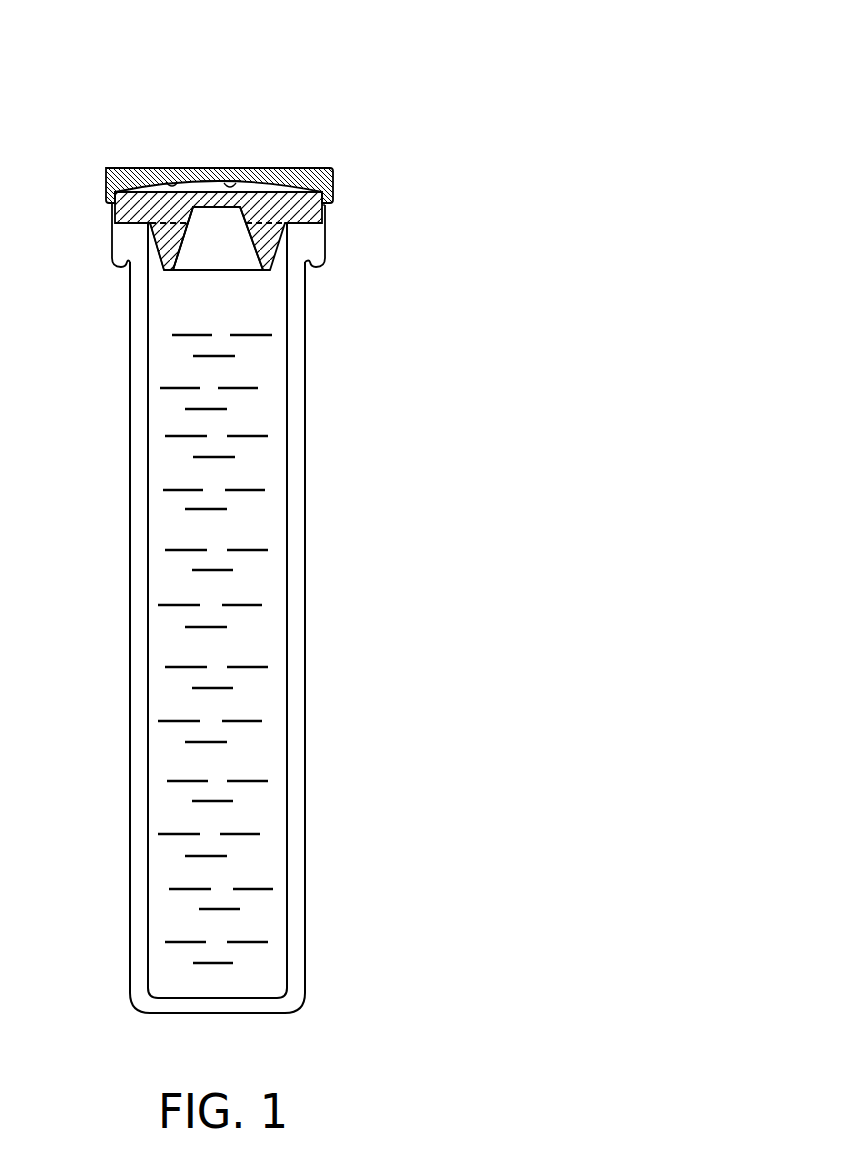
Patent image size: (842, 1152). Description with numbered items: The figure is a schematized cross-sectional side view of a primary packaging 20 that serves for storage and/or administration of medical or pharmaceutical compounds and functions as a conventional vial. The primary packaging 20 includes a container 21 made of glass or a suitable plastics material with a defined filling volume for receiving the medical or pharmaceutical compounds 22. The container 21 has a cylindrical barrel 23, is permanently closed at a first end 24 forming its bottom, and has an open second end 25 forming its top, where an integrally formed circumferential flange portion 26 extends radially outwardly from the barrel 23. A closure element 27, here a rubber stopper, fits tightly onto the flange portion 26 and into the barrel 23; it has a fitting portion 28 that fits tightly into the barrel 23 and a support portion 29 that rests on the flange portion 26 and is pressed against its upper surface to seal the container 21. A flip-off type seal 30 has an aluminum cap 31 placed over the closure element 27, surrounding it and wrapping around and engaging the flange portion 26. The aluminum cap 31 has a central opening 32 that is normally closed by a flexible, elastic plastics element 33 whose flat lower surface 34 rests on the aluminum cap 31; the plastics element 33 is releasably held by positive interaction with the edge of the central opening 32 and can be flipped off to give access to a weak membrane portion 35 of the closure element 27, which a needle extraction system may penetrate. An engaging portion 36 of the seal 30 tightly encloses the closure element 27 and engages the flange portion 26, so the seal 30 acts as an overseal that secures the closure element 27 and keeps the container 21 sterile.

The primary packaging 20 is at (384, 89).
The container 21 is at (90, 397).
The medical or pharmaceutical compounds 22 is at (257, 490).
The cylindrical barrel 23 is at (307, 537).
The first end 24 is at (265, 997).
The open second end 25 is at (390, 163).
The flange portion 26 is at (313, 243).
The closure element 27 is at (115, 208).
The fitting portion 28 is at (170, 263).
The support portion 29 is at (193, 213).
The flip-off type seal 30 is at (97, 151).
The aluminum cap 31 is at (113, 232).
The central opening 32 is at (248, 156).
The plastics element 33 is at (163, 167).
The flat lower surface 34 is at (235, 183).
The weak membrane portion 35 is at (230, 210).
The engaging portion 36 is at (318, 265).